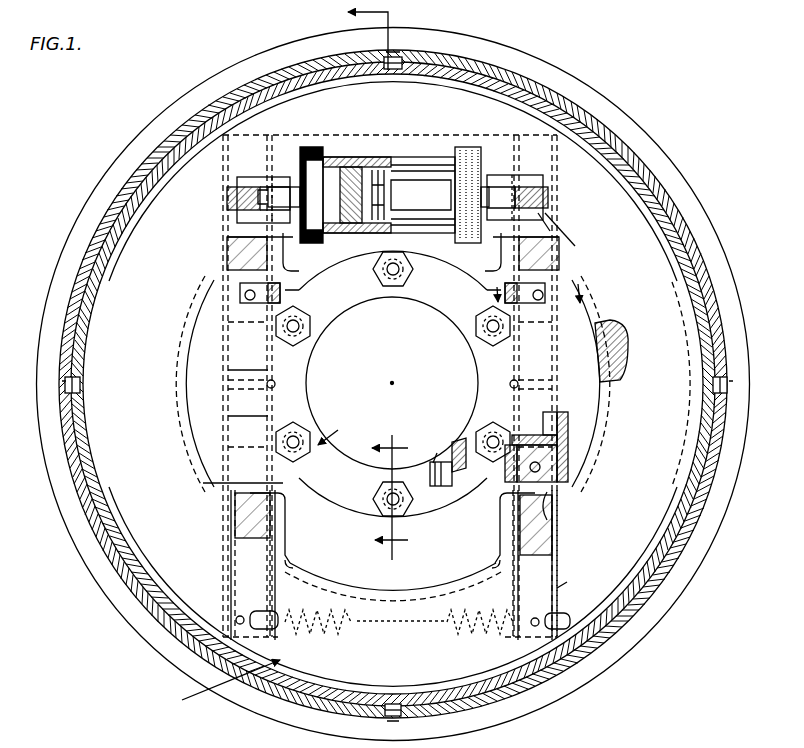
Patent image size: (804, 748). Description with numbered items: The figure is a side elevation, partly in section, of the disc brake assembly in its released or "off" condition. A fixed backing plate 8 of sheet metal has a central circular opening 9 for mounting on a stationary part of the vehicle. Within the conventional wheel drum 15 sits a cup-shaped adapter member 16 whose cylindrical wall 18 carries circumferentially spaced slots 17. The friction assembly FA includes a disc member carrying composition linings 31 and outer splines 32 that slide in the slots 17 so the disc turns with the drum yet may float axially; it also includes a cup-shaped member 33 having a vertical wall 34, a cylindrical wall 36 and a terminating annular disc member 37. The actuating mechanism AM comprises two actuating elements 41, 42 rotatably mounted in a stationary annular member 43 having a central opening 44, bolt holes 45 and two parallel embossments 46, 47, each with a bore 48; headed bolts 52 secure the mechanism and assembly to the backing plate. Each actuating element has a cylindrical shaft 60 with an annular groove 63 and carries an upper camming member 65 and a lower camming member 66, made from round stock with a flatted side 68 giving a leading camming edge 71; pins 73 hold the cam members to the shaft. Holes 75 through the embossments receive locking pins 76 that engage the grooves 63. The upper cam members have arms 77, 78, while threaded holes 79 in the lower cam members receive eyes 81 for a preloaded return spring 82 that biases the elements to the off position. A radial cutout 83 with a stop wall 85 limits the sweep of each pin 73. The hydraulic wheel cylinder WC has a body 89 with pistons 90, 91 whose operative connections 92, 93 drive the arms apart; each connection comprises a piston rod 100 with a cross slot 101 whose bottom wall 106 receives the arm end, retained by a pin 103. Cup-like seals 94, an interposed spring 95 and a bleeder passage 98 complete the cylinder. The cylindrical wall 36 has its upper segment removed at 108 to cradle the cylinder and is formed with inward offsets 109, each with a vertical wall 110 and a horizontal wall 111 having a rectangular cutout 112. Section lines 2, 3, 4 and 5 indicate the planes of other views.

The section line 2- 2 is at (356, 36).
The section arrow 3 is at (210, 158).
The section line 4- 4 is at (398, 497).
The section arrow 5 is at (531, 303).
The backing plate 8 is at (153, 200).
The central circular opening 9 is at (433, 457).
The wheel drum 15 is at (496, 72).
The adapter member 16 is at (185, 633).
The slots 17 is at (397, 60).
The cylindrical wall 18 is at (258, 62).
The linings 31 is at (623, 335).
The splines 32 is at (70, 378).
The cup-shaped member 33 is at (600, 652).
The vertical wall 34 is at (440, 485).
The cylindrical wall 36 is at (599, 320).
The terminating annular disc member 37 is at (137, 547).
The actuating element 41 is at (225, 558).
The actuating element 42 is at (567, 588).
The stationary annular member 43 is at (325, 310).
The central circular opening 44 is at (478, 405).
The bolt holes 45 is at (395, 283).
The embossment 46 is at (226, 371).
The embossment 47 is at (568, 397).
The bore 48 is at (226, 416).
The headed bolts 52 is at (300, 428).
The cylindrical shaft 60 is at (236, 362).
The annular groove 63 is at (226, 388).
The upper camming member 65 is at (559, 227).
The lower camming member 66 is at (562, 507).
The flatted side 68 is at (232, 232).
The leading camming edge 71 is at (556, 267).
The pin 73 is at (278, 295).
The holes 75 is at (275, 386).
The locking pins 76 is at (274, 382).
The arm 77 is at (228, 200).
The arm 78 is at (545, 205).
The threaded hole 79 is at (248, 615).
The eye 81 is at (237, 620).
The return spring 82 is at (327, 640).
The radial cutout 83 is at (235, 283).
The wall 85 is at (242, 297).
The body 89 is at (385, 157).
The piston 90 is at (341, 157).
The piston 91 is at (448, 218).
The operative connection 92 is at (283, 170).
The operative connection 93 is at (526, 168).
The cup-like pliant seals 94 is at (393, 157).
The spring 95 is at (395, 190).
The passage 98 is at (395, 165).
The piston rod 100 is at (276, 252).
The cross slot 101 is at (270, 195).
The pin 103 is at (548, 215).
The bottom wall 106 is at (266, 190).
The removed upper segment 108 is at (347, 270).
The offsets 109 is at (500, 262).
The vertical wall 110 is at (287, 515).
The horizontal wall 111 is at (222, 268).
The rectangular cutout 112 is at (230, 512).
The actuating mechanism AM is at (338, 431).
The friction assembly FA is at (214, 685).
The wheel cylinder WC is at (430, 204).